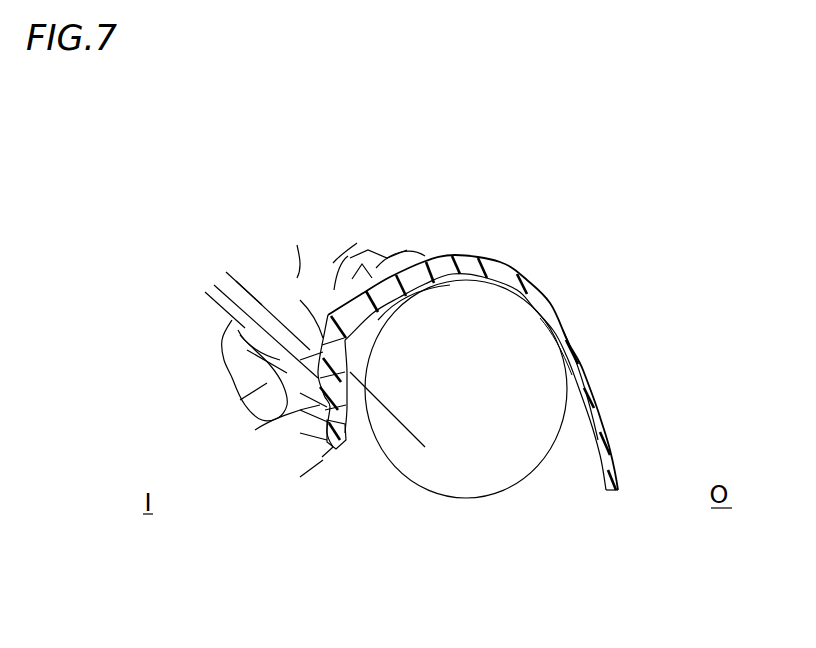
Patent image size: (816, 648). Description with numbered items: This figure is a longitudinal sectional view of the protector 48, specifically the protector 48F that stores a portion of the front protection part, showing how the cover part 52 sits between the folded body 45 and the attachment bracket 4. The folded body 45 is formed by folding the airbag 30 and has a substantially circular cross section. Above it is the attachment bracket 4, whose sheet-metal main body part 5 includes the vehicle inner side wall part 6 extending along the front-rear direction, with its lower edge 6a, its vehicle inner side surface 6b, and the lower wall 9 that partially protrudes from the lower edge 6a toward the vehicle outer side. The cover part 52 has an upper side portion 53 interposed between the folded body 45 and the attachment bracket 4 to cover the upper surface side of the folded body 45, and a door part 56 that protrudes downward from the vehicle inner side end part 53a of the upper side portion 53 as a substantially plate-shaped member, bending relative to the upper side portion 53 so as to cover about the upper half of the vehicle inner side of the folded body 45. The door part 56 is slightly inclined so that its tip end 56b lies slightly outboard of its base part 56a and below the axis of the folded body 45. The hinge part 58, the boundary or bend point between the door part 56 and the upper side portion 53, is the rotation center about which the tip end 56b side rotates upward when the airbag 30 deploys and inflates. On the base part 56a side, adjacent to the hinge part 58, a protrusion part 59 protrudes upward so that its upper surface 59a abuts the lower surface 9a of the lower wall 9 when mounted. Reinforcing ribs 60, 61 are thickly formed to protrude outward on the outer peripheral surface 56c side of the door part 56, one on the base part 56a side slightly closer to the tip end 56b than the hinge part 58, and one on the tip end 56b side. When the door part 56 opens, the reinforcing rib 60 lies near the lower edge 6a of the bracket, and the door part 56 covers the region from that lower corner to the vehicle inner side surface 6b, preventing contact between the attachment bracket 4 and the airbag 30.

The attachment bracket 4 is at (363, 210).
The main body part 5 is at (350, 252).
The vehicle inner side wall part 6 is at (228, 280).
The lower edge 6a is at (240, 353).
The vehicle inner side surface 6b is at (216, 299).
The lower wall 9 is at (362, 278).
The lower surface 9a is at (368, 270).
The airbag 30 is at (466, 447).
The folded body 45 is at (490, 500).
The protector 48 is at (488, 292).
The protector 48F is at (581, 216).
The cover part 52 is at (583, 311).
The upper side portion 53 is at (523, 270).
The vehicle inner side end part 53a is at (383, 327).
The door part 56 is at (333, 453).
The base part 56a is at (352, 376).
The tip end 56b is at (340, 433).
The outer peripheral surface 56c is at (287, 427).
The hinge part 58 is at (350, 347).
The protrusion part 59 is at (347, 300).
The upper surface 59a is at (337, 310).
The reinforcing rib 60 is at (308, 365).
The reinforcing rib 61 is at (331, 450).